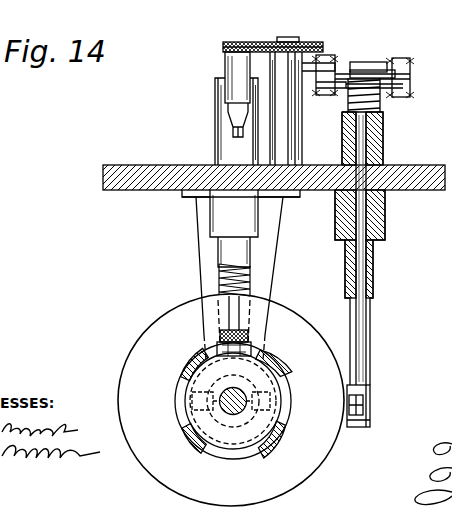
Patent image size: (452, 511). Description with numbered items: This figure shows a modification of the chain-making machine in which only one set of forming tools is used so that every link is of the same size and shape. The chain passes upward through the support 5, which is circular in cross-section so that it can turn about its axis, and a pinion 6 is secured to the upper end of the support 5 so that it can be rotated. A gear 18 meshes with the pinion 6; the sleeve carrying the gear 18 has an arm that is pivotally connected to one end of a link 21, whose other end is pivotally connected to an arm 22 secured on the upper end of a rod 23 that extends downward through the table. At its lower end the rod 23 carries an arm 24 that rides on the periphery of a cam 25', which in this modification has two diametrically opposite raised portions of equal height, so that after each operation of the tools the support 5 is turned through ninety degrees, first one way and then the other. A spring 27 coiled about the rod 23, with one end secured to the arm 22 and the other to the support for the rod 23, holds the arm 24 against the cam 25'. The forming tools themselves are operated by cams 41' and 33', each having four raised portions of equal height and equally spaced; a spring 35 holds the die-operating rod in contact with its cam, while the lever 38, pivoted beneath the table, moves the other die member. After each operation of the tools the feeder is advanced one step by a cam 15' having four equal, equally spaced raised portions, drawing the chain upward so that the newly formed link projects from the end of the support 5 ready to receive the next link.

The support 5 is at (215, 108).
The pinion 6 is at (229, 44).
The gear 18 is at (266, 44).
The link 21 is at (344, 76).
The arm 22 is at (380, 68).
The rod 23 is at (367, 321).
The arm 24 is at (356, 406).
The spring 27 is at (378, 100).
The spring 35 is at (224, 275).
The lever 38 is at (228, 300).
The cam 15' is at (204, 345).
The cam 25' is at (212, 400).
The cam 33' is at (209, 401).
The cam 41' is at (236, 411).